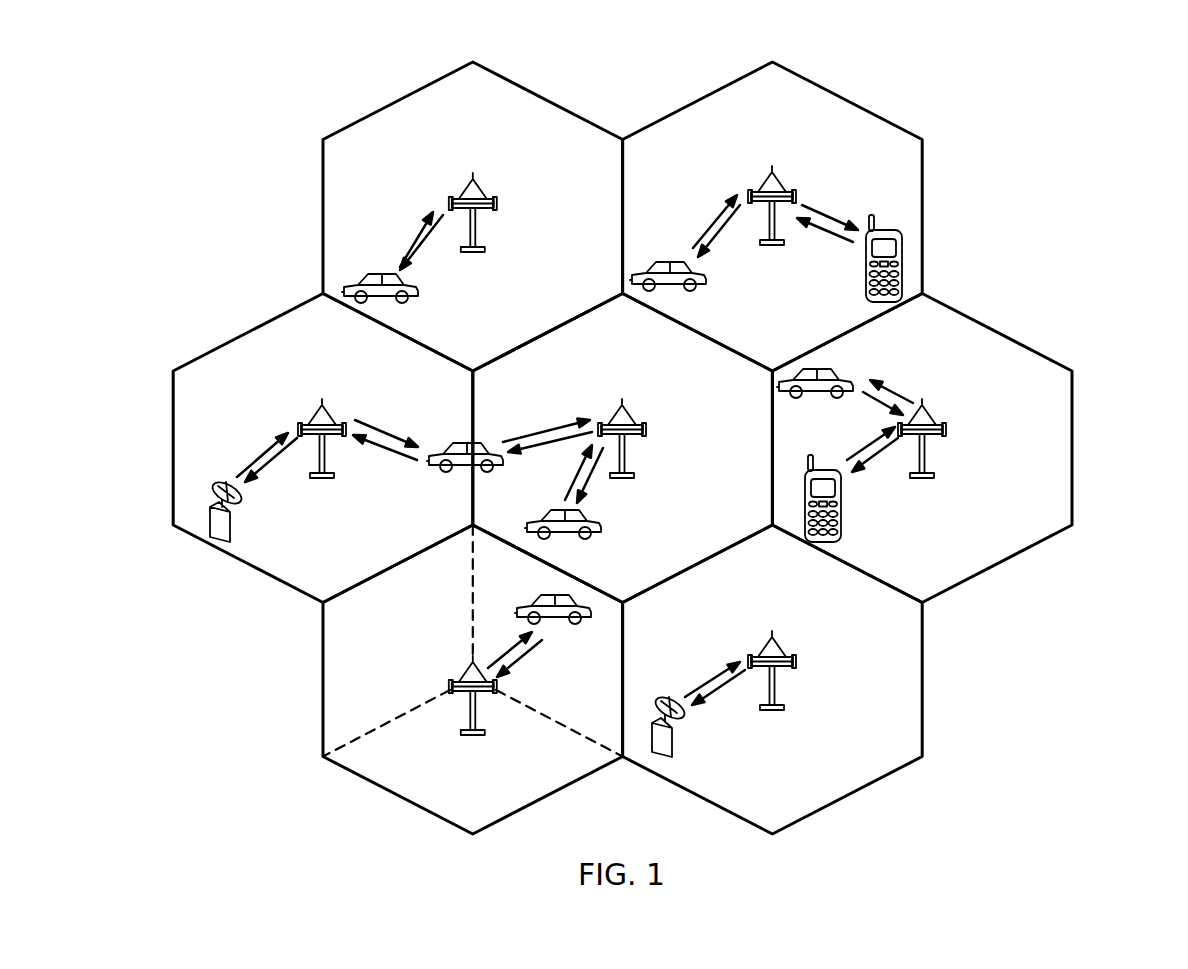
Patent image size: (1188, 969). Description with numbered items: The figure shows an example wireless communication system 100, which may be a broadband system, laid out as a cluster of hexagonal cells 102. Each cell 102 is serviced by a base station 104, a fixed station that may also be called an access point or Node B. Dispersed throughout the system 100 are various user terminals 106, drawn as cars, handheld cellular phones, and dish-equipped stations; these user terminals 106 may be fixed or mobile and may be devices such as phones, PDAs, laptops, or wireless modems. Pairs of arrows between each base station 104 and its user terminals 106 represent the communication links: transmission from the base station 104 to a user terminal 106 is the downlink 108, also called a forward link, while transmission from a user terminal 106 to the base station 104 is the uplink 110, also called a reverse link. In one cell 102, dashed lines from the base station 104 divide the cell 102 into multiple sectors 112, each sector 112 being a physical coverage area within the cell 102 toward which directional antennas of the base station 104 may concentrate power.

The wireless communication system 100 is at (1062, 136).
The cell 102 is at (405, 95).
The base station 104 is at (473, 173).
The user terminal 106 is at (420, 292).
The downlink 108 is at (425, 250).
The uplink 110 is at (412, 237).
The sector 112 is at (525, 792).